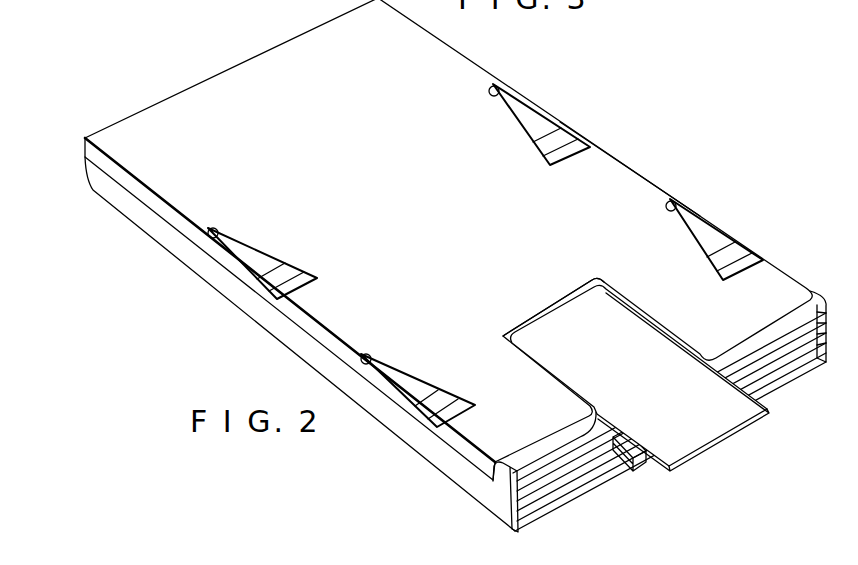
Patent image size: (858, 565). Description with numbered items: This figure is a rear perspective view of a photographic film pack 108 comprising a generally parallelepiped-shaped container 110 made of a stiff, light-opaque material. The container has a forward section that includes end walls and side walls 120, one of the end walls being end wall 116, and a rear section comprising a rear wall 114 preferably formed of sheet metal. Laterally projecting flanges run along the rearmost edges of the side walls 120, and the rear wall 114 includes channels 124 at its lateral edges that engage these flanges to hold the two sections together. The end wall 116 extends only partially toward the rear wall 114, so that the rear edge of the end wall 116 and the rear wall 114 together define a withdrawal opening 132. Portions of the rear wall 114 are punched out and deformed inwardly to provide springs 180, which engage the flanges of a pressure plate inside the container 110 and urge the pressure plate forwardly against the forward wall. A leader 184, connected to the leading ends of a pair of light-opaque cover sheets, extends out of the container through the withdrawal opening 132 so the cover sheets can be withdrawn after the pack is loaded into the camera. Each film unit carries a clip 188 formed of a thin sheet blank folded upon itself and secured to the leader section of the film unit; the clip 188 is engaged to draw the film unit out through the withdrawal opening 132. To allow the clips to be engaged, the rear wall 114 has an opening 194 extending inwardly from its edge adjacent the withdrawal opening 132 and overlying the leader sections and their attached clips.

The film pack 108 is at (633, 143).
The container 110 is at (634, 169).
The rear wall 114 is at (421, 217).
The end wall 116 is at (568, 496).
The side walls 120 is at (290, 333).
The channels 124 is at (328, 342).
The withdrawal opening 132 is at (820, 346).
The springs 180 is at (540, 127).
The leader 184 is at (697, 430).
The clip 188 is at (640, 466).
The opening 194 is at (550, 312).